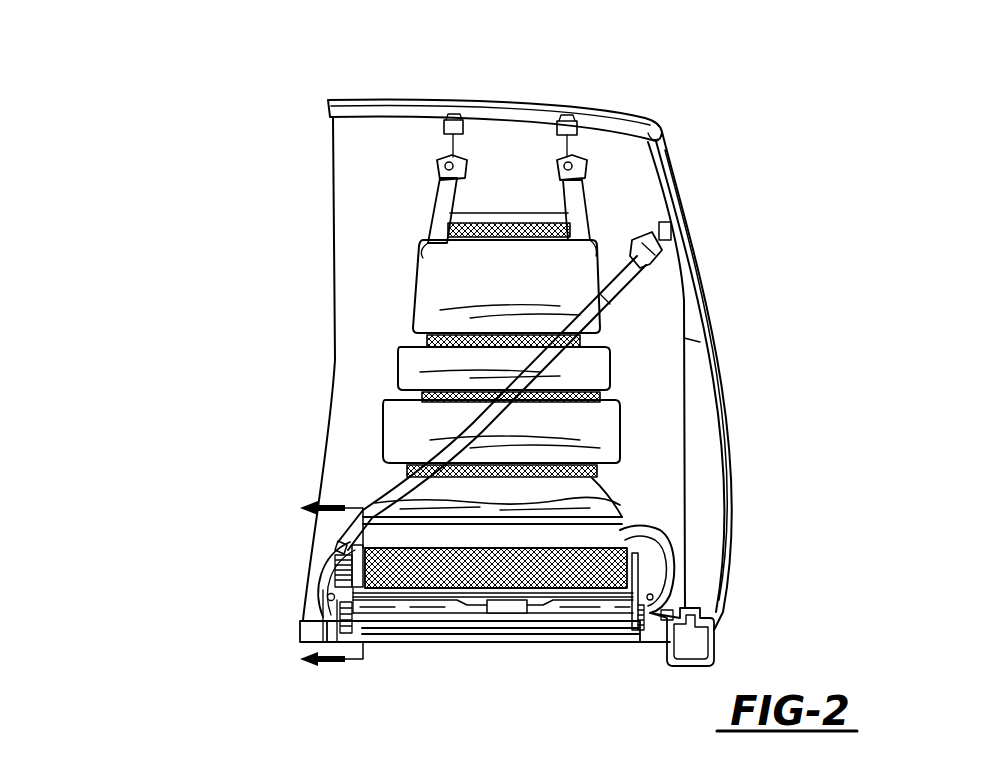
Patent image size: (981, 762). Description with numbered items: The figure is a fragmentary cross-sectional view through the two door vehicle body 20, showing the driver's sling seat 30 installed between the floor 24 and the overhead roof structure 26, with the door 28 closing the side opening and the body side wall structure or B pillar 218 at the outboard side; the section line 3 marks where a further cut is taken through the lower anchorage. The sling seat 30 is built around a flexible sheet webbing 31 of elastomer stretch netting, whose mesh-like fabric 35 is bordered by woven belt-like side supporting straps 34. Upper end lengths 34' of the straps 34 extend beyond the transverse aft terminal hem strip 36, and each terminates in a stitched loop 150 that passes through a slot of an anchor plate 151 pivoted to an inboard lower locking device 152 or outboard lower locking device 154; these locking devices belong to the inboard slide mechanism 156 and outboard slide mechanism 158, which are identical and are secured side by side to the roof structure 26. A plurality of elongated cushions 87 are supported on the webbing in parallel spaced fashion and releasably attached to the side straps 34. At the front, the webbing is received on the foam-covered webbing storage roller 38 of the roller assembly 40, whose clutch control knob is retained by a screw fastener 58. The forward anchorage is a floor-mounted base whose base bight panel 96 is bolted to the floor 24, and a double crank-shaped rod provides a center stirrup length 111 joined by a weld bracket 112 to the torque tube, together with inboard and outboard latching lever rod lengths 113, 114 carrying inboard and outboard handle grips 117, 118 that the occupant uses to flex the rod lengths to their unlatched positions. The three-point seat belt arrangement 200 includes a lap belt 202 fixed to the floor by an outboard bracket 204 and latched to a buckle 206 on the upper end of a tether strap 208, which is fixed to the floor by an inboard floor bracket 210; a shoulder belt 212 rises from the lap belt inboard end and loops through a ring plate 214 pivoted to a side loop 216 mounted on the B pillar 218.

The section line 3- 3 is at (331, 577).
The two door vehicle body 20 is at (806, 147).
The floor 24 is at (303, 628).
The overhead roof structure 26 is at (362, 100).
The door 28 is at (730, 432).
The driver's sling seat 30 is at (622, 365).
The flexible sheet webbing 31 is at (535, 208).
The side supporting straps 34 is at (526, 389).
The upper end lengths of straps 34' is at (454, 218).
The mesh-like fabric 35 is at (505, 222).
The transverse aft terminal hem strip 36 is at (427, 245).
The webbing storage roller 38 is at (482, 536).
The roller assembly 40 is at (632, 541).
The screw fastener 58 is at (387, 548).
The elongated cushions 87 is at (416, 290).
The base bight panel 96 is at (405, 633).
The center stirrup length 111 is at (467, 620).
The weld bracket 112 is at (512, 615).
The inboard latching lever rod length 113 is at (410, 622).
The outboard latching lever rod length 114 is at (580, 618).
The inboard handle grip 117 is at (352, 556).
The outboard handle grip 118 is at (650, 633).
The stitched loop 150 is at (466, 160).
The anchor plate 151 is at (437, 168).
The inboard lower locking device 152 is at (436, 136).
The outboard lower locking device 154 is at (586, 136).
The inboard slide mechanism 156 is at (422, 120).
The outboard slide mechanism 158 is at (547, 130).
The three-point seat belt arrangement 200 is at (681, 552).
The lap belt 202 is at (680, 572).
The outboard bracket 204 is at (678, 627).
The buckle 206 is at (337, 548).
The tether strap 208 is at (325, 588).
The inboard floor bracket 210 is at (307, 617).
The shoulder belt 212 is at (630, 275).
The ring plate 214 is at (660, 262).
The side loop 216 is at (668, 225).
The B pillar 218 is at (673, 187).